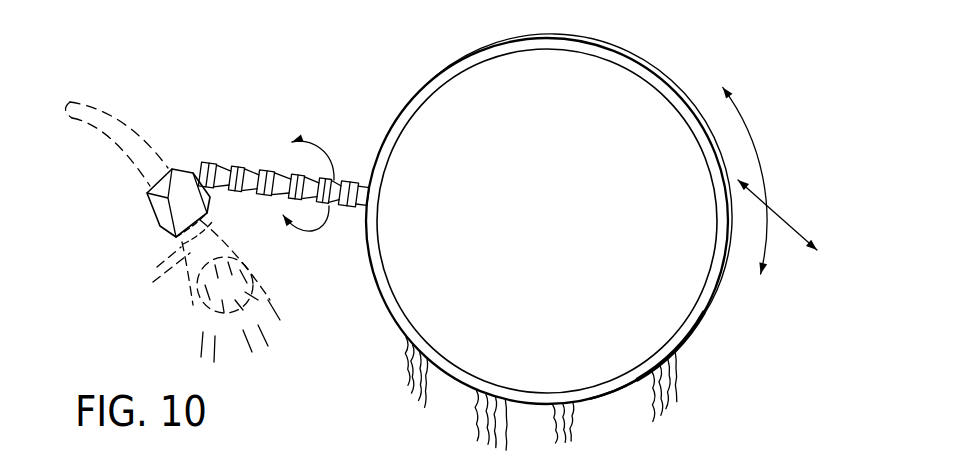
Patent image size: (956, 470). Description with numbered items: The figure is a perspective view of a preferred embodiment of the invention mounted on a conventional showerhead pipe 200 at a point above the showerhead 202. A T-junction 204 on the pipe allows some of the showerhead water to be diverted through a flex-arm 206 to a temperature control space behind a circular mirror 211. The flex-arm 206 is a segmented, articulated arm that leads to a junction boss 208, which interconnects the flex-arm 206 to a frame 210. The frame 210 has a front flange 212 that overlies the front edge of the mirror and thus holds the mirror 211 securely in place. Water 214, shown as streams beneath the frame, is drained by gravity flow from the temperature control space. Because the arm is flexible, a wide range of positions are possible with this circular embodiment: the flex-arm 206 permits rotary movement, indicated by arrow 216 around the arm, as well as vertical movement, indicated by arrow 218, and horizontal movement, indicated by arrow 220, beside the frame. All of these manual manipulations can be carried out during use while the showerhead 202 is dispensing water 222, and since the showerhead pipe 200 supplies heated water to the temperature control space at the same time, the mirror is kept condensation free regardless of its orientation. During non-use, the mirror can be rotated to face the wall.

The showerhead pipe 200 is at (108, 112).
The showerhead 202 is at (180, 246).
The T-junction 204 is at (186, 170).
The flex-arm 206 is at (257, 142).
The junction boss 208 is at (367, 190).
The frame 210 is at (632, 49).
The circular mirror 211 is at (558, 371).
The front flange 212 is at (702, 312).
The water 214 is at (470, 410).
The arrow 216 is at (331, 152).
The arrow 218 is at (754, 143).
The arrow 220 is at (793, 218).
The water 222 is at (208, 322).